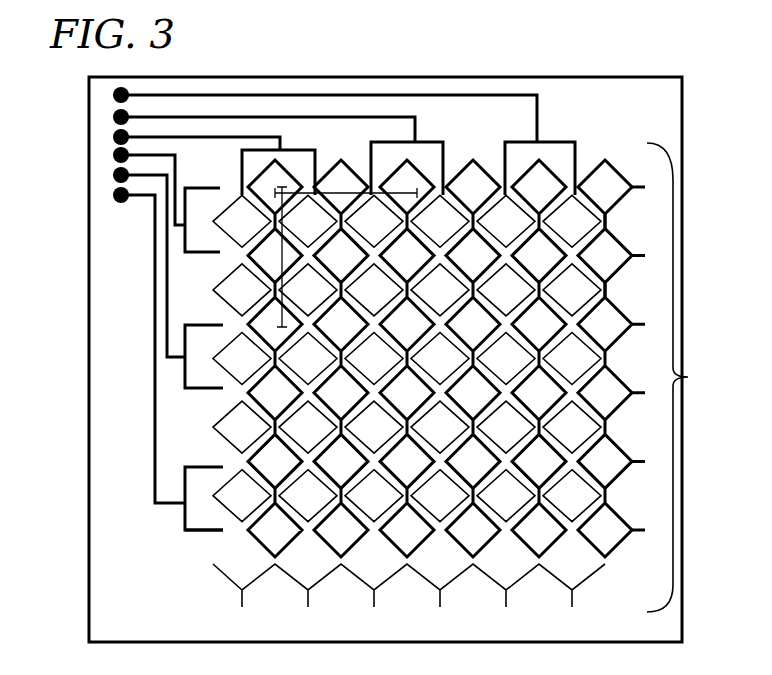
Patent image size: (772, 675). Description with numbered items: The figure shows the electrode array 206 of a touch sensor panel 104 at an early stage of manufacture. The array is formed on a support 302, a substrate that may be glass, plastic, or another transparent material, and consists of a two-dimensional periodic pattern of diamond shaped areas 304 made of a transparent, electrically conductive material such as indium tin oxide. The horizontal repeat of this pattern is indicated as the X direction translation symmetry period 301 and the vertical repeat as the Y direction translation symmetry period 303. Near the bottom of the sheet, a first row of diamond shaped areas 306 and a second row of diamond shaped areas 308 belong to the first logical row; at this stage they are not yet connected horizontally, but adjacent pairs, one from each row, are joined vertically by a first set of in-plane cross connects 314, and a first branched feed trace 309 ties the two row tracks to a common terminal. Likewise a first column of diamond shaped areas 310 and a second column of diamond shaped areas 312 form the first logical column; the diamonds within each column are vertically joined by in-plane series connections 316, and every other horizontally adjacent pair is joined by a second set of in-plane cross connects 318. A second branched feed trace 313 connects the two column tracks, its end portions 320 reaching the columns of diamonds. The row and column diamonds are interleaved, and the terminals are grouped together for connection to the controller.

The support 302 is at (597, 85).
The touch sensor panel 104 is at (531, 77).
The second branched feed trace 313 is at (538, 142).
The end portions 320 is at (483, 300).
The electrode array 206 is at (273, 168).
The X direction translation symmetry period 301 is at (382, 188).
The Y direction translation symmetry period 303 is at (282, 262).
The second row of diamond shaped areas 308 is at (380, 470).
The first set of in-plane cross connects 314 is at (300, 470).
The first row of diamond shaped areas 306 is at (350, 520).
The first branched feed trace 309 is at (185, 530).
The second column of diamond shaped areas 312 is at (470, 430).
The first column of diamond shaped areas 310 is at (620, 600).
The in-plane series connections 316 is at (500, 560).
The second set of in-plane cross connects 318 is at (600, 262).
The diamond shaped areas 304 is at (690, 377).